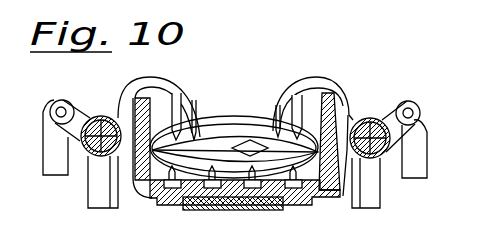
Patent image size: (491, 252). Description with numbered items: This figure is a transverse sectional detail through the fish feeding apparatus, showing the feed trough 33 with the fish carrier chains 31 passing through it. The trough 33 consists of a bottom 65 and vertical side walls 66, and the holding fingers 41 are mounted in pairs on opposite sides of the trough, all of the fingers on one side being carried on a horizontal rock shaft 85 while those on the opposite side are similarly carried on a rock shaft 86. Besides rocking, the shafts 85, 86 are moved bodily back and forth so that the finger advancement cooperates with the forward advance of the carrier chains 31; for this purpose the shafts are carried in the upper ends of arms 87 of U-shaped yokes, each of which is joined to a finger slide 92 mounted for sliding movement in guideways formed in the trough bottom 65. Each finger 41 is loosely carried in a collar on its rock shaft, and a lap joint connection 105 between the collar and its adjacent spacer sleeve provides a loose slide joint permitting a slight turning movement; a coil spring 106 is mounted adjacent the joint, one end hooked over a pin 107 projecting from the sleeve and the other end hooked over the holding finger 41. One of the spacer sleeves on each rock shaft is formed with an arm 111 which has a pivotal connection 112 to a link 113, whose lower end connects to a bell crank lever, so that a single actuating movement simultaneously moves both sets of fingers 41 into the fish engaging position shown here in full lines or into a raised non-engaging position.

The chains 31 is at (252, 200).
The feed trough 33 is at (267, 95).
The holding fingers 41 is at (165, 92).
The bottom 65 is at (272, 198).
The side walls 66 is at (148, 97).
The rock shaft 85 is at (373, 122).
The rock shaft 86 is at (100, 116).
The arms 87 is at (100, 200).
The finger slide 92 is at (202, 211).
The lap joint connection 105 is at (352, 110).
The coil spring 106 is at (383, 160).
The pin 107 is at (345, 190).
The arm 111 is at (77, 116).
The pivotal connection 112 is at (55, 105).
The link 113 is at (47, 155).